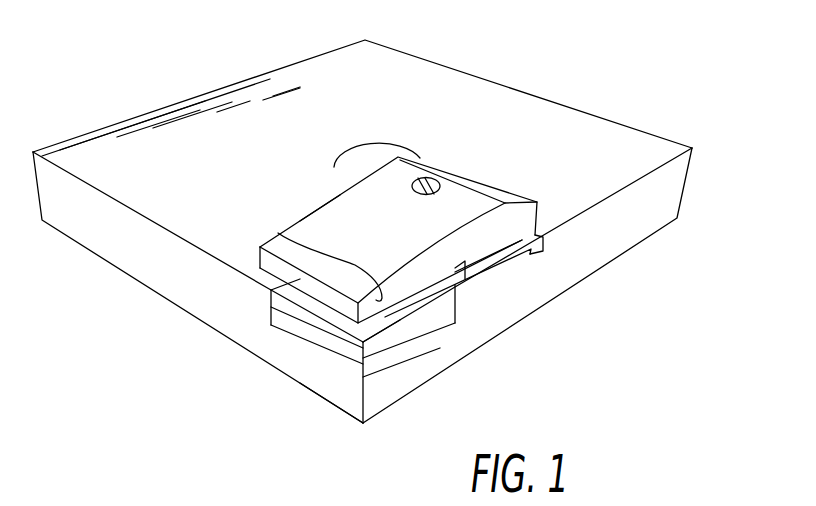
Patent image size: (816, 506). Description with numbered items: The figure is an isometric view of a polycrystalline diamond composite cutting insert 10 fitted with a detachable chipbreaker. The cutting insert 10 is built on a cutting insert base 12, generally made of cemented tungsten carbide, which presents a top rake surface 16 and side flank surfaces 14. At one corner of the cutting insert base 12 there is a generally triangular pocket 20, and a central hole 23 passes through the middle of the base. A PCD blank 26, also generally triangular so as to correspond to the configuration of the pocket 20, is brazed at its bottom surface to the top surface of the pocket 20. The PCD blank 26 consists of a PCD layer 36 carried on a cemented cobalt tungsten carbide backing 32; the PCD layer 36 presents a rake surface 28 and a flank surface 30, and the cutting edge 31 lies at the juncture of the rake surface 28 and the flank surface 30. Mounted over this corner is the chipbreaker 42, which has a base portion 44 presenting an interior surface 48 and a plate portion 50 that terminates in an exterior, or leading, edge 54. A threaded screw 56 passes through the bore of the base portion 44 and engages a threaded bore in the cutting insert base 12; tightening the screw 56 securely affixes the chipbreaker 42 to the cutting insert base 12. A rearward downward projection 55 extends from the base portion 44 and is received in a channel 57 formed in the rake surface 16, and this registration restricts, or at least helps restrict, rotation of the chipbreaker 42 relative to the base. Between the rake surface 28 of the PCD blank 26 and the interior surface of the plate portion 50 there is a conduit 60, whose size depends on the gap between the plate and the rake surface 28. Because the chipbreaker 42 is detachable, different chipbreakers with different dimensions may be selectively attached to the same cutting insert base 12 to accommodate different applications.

The polycrystalline diamond composite cutting insert 10 is at (660, 53).
The cutting insert base 12 is at (692, 166).
The flank surfaces 14 is at (100, 240).
The rake surface 16 is at (344, 50).
The pocket 20 is at (447, 300).
The central hole 23 is at (386, 148).
The PCD blank 26 is at (295, 338).
The rake surface 28 is at (422, 305).
The flank surface 30 is at (340, 338).
The cutting edge 31 is at (395, 346).
The cemented tungsten carbide backing 32 is at (342, 386).
The PCD layer 36 is at (372, 347).
The chipbreaker 42 is at (320, 202).
The base portion 44 is at (498, 250).
The interior surface 48 is at (466, 270).
The plate portion 50 is at (388, 217).
The exterior edge 54 is at (278, 233).
The rearward downward projection 55 is at (540, 200).
The threaded screw 56 is at (440, 180).
The channel 57 is at (532, 254).
The conduit 60 is at (300, 297).